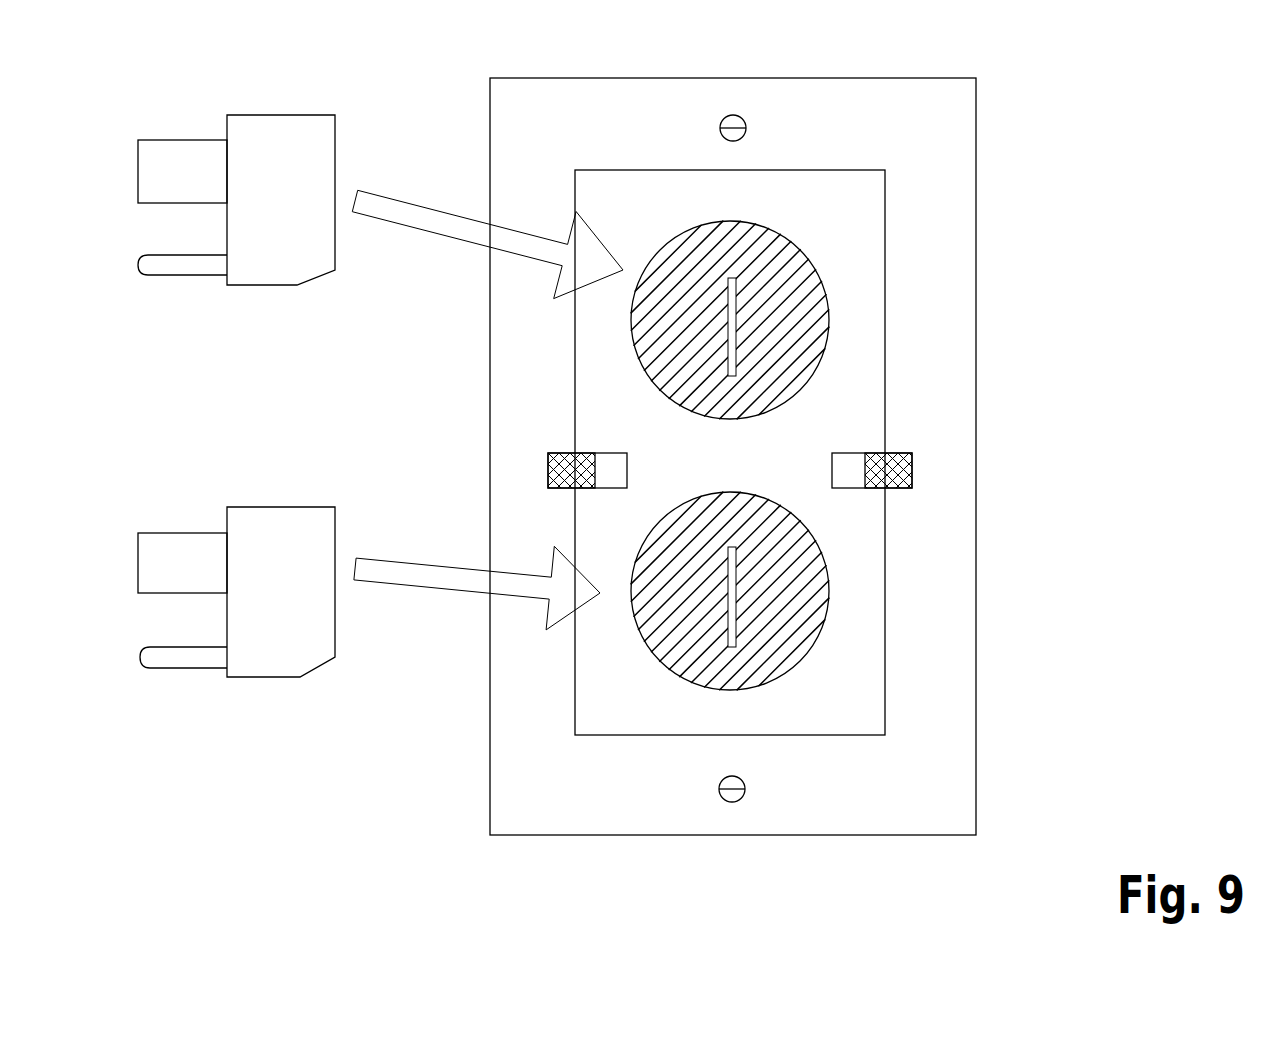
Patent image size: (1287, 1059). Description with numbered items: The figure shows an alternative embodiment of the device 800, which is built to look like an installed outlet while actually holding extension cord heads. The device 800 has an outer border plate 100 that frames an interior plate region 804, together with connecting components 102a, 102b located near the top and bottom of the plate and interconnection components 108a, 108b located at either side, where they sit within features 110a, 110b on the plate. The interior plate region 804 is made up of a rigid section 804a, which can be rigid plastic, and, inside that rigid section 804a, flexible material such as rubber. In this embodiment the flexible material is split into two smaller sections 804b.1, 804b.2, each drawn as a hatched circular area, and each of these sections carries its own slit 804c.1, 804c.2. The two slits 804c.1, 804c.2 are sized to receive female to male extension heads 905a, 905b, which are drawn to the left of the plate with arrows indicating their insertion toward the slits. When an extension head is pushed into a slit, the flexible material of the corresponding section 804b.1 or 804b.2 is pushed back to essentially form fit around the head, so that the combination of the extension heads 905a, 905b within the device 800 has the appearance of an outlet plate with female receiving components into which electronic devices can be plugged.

The device 800 is at (1020, 72).
The outer border plate 100 is at (508, 752).
The connecting component 102a is at (733, 114).
The connecting component 102b is at (733, 804).
The interior plate region 804 is at (785, 740).
The rigid section 804a is at (830, 707).
The flexible section 804b.1 is at (820, 625).
The flexible section 804b.2 is at (818, 302).
The slit 804c.1 is at (760, 572).
The slit 804c.2 is at (760, 238).
The left slot 110a is at (615, 475).
The right slot 110b is at (847, 462).
The interconnection component 108a is at (548, 462).
The interconnection component 108b is at (915, 463).
The female to male extension head 905a is at (262, 135).
The female to male extension head 905b is at (262, 525).